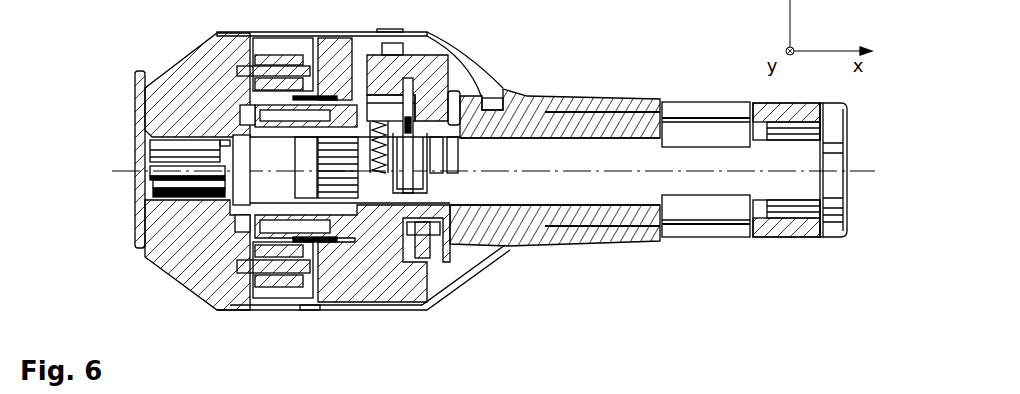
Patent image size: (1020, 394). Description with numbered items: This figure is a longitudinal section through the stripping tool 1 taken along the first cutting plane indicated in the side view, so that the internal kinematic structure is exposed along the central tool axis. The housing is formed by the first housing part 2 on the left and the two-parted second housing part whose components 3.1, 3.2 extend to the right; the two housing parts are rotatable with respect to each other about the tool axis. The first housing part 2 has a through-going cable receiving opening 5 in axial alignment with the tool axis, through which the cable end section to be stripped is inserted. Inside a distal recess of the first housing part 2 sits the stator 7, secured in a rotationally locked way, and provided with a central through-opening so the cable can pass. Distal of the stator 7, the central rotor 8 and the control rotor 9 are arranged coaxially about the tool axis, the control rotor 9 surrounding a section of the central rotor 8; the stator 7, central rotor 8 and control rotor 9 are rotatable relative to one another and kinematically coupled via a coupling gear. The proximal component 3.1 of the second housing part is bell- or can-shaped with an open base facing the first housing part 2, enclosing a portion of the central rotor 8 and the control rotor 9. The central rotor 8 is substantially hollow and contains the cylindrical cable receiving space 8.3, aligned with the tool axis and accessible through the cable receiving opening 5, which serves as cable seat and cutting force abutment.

The stripping tool 1 is at (543, 26).
The first housing part 2 is at (197, 78).
The component of second housing part 3.1 is at (347, 32).
The component of second housing part 3.2 is at (573, 97).
The cable receiving opening 5 is at (133, 182).
The stator 7 is at (245, 288).
The central rotor 8 is at (480, 217).
The cable receiving space 8.3 is at (567, 182).
The control rotor 9 is at (398, 285).